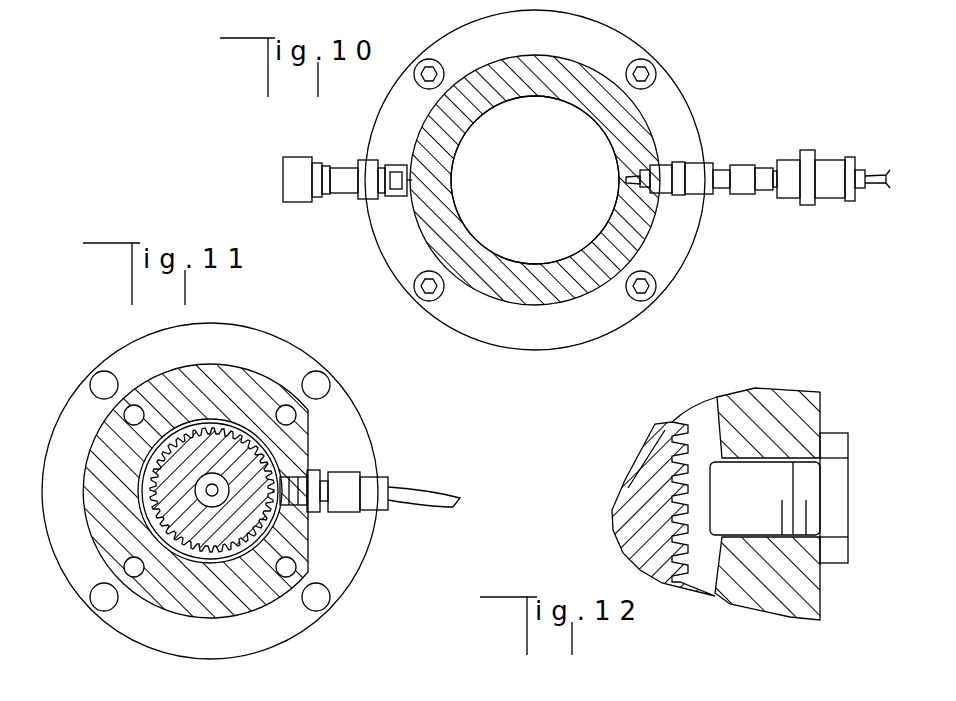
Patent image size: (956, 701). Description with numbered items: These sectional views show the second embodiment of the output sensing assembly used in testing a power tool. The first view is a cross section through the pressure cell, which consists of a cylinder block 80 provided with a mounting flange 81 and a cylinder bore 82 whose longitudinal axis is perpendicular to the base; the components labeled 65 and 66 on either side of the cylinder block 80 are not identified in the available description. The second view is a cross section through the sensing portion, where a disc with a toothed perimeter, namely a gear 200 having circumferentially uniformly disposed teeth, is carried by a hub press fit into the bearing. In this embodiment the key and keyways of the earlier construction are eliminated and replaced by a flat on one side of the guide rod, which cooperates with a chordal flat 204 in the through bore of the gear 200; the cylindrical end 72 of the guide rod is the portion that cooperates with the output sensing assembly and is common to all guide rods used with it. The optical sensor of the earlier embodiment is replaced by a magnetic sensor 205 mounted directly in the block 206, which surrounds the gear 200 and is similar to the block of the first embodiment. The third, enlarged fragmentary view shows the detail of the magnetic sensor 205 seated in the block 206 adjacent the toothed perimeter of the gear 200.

In FIG. 10, the inlet fitting 65 is at (340, 170).
In FIG. 10, the outlet fitting 66 is at (723, 167).
In FIG. 10, the cylinder block 80 is at (643, 102).
In FIG. 10, the mounting flange 81 is at (678, 255).
In FIG. 10, the cylinder bore 82 is at (551, 175).
In FIG. 11, the gear 200 is at (213, 440).
In FIG. 12, the gear 200 is at (647, 509).
In FIG. 11, the chordal flat 204 is at (233, 432).
In FIG. 11, the magnetic sensor 205 is at (352, 483).
In FIG. 12, the magnetic sensor 205 is at (757, 477).
In FIG. 11, the block 206 is at (110, 436).
In FIG. 12, the block 206 is at (768, 392).
In FIG. 11, the opposite end of the guide rod 72 is at (207, 517).